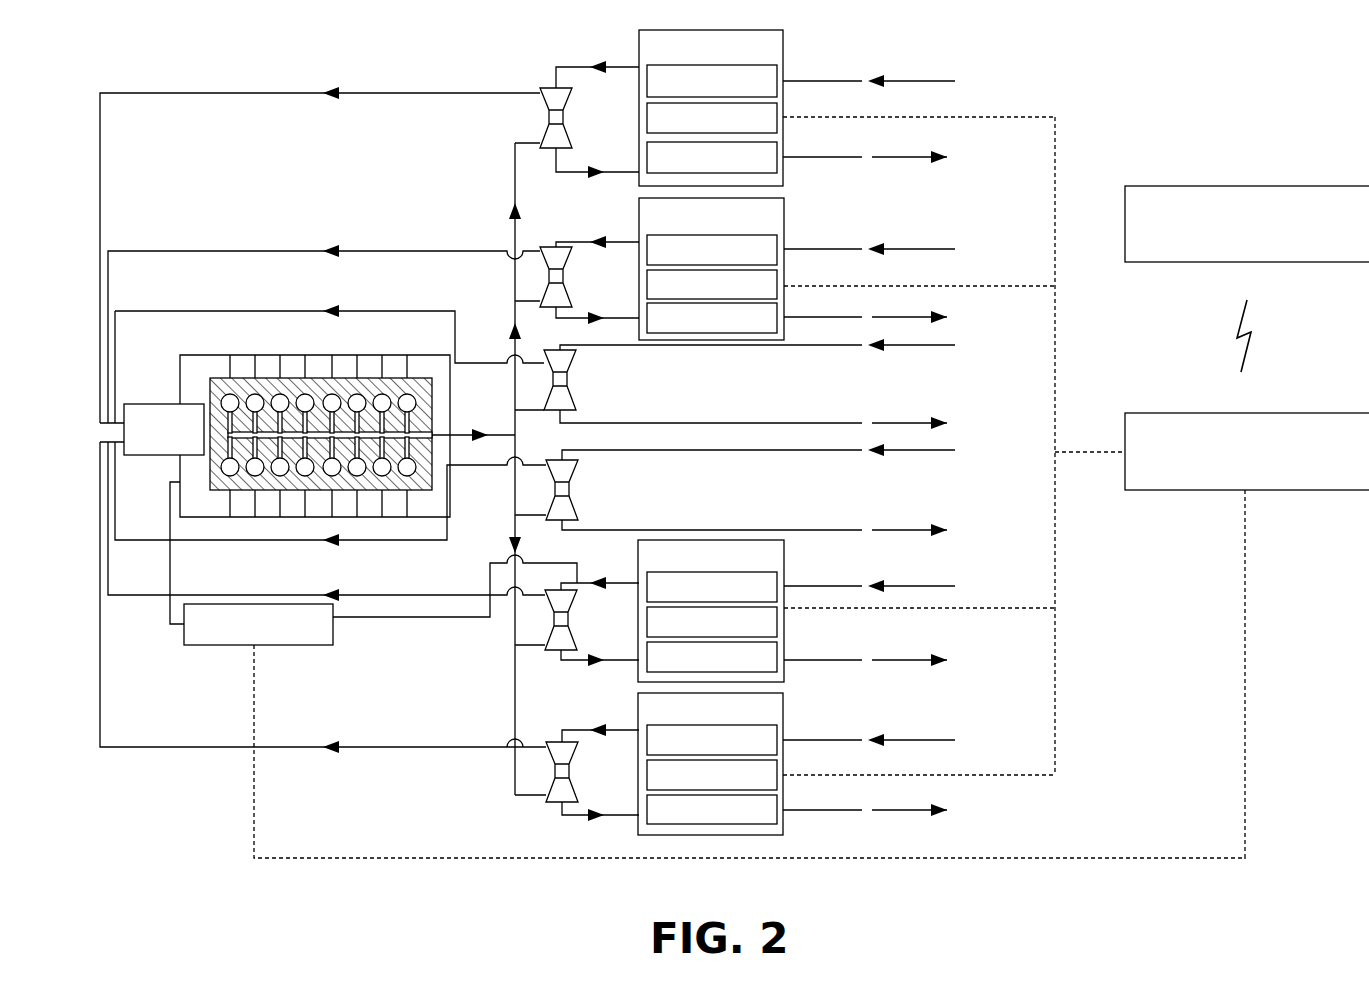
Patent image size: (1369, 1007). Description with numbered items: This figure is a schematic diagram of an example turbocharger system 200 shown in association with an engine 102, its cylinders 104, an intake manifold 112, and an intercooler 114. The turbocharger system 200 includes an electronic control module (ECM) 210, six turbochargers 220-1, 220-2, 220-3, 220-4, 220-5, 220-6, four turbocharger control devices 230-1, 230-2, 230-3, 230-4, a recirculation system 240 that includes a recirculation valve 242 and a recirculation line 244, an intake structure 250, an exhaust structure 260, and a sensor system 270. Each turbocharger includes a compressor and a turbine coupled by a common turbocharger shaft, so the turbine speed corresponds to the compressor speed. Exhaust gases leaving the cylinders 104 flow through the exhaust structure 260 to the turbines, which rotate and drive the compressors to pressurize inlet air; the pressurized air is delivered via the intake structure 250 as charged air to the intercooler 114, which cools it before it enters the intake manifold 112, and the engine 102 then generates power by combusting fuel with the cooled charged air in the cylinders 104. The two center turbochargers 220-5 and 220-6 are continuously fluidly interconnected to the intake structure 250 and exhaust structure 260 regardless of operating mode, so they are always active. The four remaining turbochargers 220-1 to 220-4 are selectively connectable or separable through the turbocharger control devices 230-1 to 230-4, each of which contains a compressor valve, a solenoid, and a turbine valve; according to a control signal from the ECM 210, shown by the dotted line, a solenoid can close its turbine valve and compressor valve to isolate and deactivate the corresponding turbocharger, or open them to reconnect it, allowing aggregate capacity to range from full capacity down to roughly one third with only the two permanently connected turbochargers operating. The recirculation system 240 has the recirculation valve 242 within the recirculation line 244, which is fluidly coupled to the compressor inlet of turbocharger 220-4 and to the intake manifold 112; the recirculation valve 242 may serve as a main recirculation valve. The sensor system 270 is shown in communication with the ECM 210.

The turbocharger system 200 is at (1097, 78).
The engine 102 is at (432, 390).
The cylinders 104 is at (228, 399).
The intake manifold 112 is at (172, 472).
The intercooler 114 is at (164, 429).
The electronic control module (ECM) 210 is at (1212, 446).
The turbocharger 220-1 is at (537, 113).
The turbocharger 220-2 is at (541, 275).
The turbocharger 220-3 is at (537, 775).
The turbocharger 220-4 is at (541, 625).
The turbocharger 220-5 is at (580, 378).
The turbocharger 220-6 is at (579, 488).
The turbocharger control device 230-1 is at (847, 108).
The turbocharger control device 230-2 is at (847, 269).
The turbocharger control device 230-3 is at (846, 764).
The turbocharger control device 230-4 is at (846, 611).
The recirculation system 240 is at (158, 635).
The recirculation valve 242 is at (258, 624).
The recirculation line 244 is at (358, 620).
The intake structure 250 is at (293, 85).
The exhaust structure 260 is at (502, 183).
The sensor system 270 is at (1247, 279).